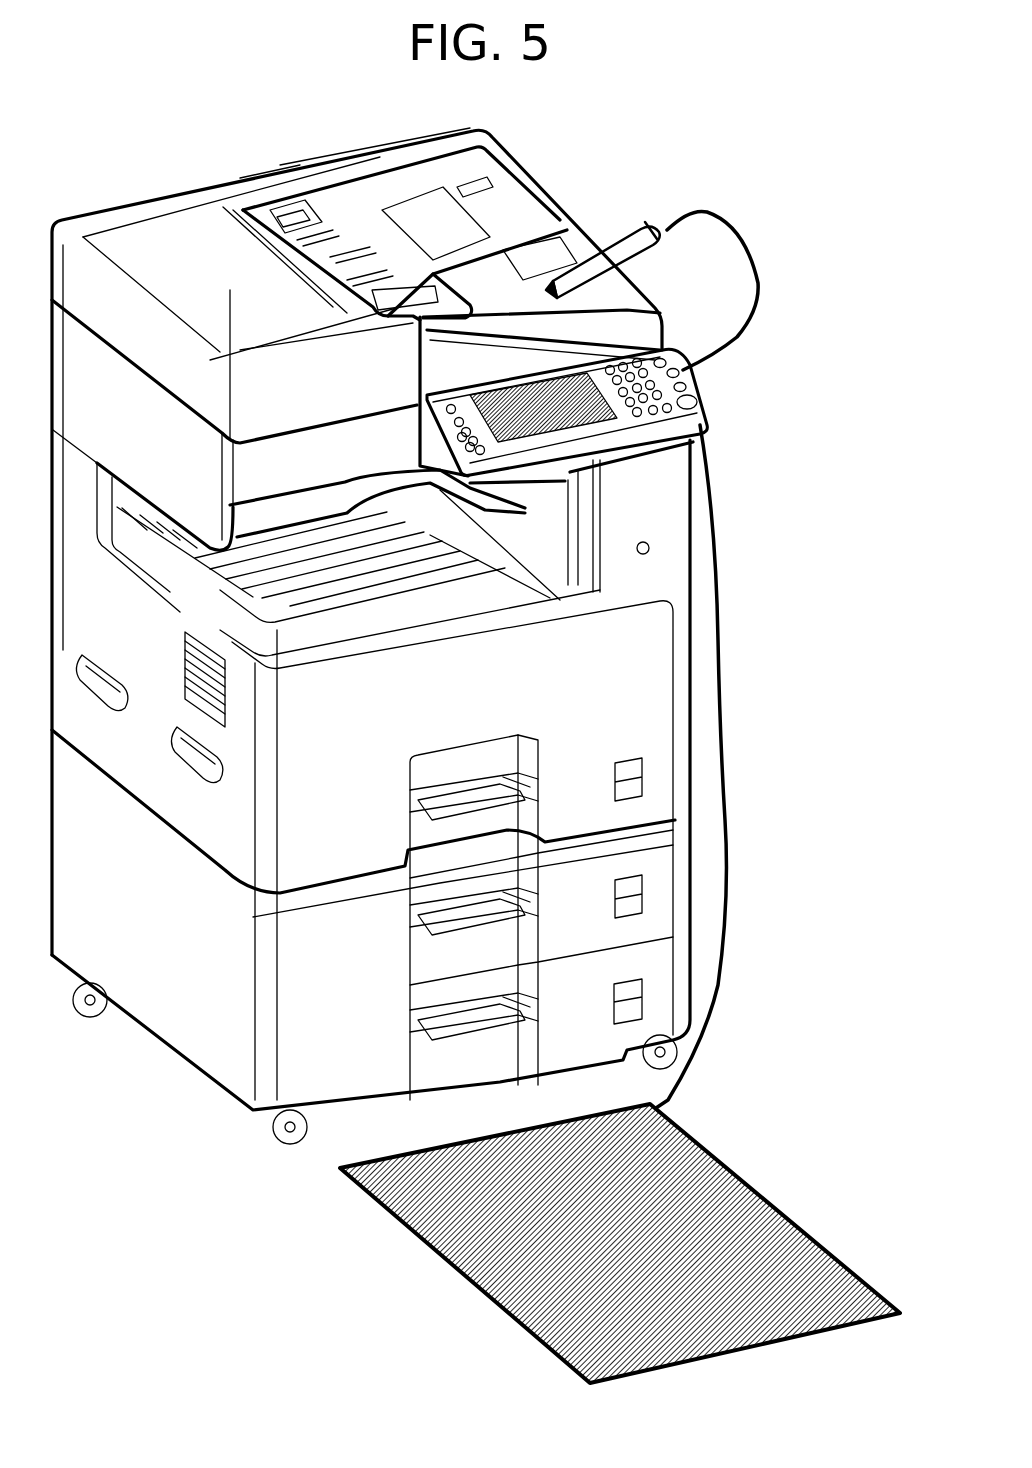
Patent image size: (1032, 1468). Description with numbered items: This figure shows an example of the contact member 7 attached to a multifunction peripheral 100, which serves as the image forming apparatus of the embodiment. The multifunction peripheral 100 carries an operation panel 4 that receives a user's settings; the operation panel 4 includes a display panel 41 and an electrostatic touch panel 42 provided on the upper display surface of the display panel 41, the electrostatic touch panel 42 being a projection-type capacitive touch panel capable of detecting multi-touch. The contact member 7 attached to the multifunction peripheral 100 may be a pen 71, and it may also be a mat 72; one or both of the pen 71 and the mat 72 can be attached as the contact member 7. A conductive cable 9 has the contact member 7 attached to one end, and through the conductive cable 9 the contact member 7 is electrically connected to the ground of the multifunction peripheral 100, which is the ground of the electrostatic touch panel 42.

The multifunction peripheral 100 is at (136, 192).
The operation panel 4 is at (700, 390).
The display panel 41 is at (581, 410).
The electrostatic touch panel 42 is at (543, 407).
The contact member 7 is at (620, 779).
The pen 71 is at (627, 245).
The mat 72 is at (718, 1155).
The conductive cable 9 is at (758, 256).